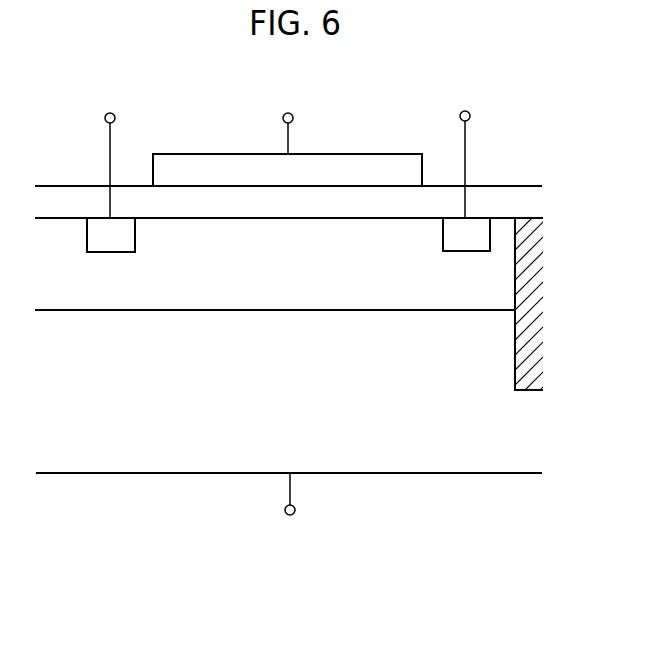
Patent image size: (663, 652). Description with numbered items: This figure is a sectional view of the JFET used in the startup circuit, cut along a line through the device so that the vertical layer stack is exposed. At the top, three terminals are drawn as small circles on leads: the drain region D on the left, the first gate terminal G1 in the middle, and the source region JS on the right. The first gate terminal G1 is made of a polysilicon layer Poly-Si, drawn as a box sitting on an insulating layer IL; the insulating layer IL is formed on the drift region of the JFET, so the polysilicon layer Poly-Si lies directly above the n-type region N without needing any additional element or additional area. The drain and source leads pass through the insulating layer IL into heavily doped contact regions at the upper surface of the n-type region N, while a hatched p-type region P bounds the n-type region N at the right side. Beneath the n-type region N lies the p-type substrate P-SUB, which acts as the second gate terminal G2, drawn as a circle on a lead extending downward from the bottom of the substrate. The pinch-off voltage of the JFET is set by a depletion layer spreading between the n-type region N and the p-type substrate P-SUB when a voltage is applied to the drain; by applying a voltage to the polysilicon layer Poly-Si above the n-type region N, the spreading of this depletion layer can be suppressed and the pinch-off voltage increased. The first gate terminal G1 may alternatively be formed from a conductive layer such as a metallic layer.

The drain region D is at (112, 152).
The first gate terminal G1 is at (288, 120).
The source region JS is at (467, 151).
The second gate terminal G2 is at (292, 508).
The polysilicon layer Poly-Si is at (287, 170).
The insulating layer IL is at (290, 203).
The N-type well region N is at (275, 294).
The P-type region P is at (530, 310).
The p-type substrate P-SUB is at (289, 443).